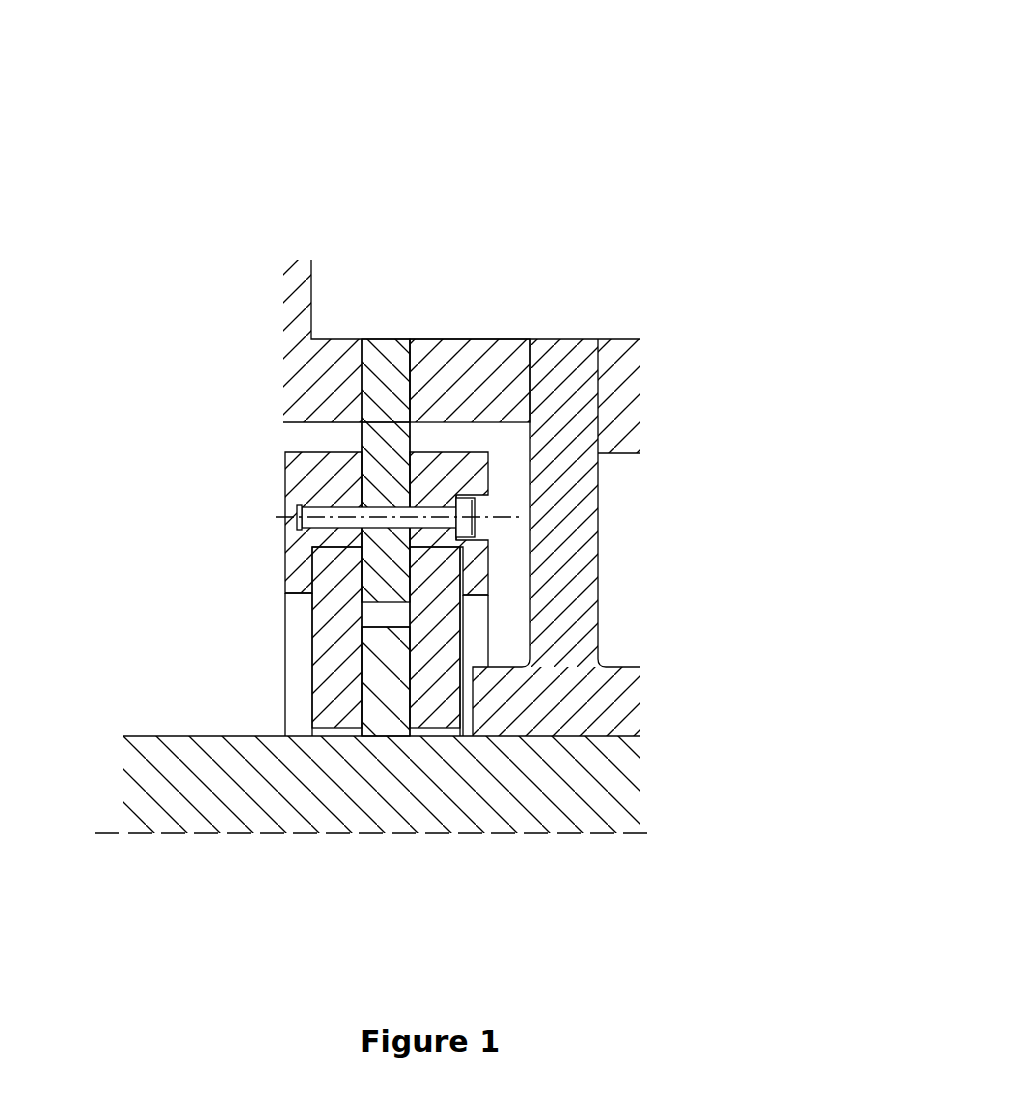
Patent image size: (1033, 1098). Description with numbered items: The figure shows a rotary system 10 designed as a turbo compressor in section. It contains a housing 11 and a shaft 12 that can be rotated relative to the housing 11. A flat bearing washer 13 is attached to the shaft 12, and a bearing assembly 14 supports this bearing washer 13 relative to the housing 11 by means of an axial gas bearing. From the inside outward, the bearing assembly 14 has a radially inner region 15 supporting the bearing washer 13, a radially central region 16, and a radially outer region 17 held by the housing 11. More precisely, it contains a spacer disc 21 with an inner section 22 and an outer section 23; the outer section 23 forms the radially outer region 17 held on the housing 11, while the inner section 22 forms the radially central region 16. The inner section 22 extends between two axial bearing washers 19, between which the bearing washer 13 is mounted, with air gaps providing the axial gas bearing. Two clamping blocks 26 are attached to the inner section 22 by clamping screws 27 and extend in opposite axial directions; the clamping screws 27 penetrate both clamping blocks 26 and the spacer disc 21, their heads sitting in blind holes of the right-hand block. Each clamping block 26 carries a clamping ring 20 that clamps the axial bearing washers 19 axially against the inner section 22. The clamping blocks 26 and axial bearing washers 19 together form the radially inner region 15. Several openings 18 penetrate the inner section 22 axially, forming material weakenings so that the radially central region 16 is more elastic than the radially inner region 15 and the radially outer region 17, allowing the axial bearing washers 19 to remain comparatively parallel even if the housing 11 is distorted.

The rotary system 10 is at (615, 97).
The housing 11 is at (633, 357).
The shaft 12 is at (558, 787).
The bearing washer 13 is at (387, 712).
The bearing assembly 14 is at (440, 408).
The radially inner region 15 is at (478, 652).
The radially central region 16 is at (345, 445).
The radially outer region 17 is at (420, 380).
The openings 18 is at (377, 437).
The axial bearing washers 19 is at (340, 685).
The clamping ring 20 is at (287, 573).
The spacer disc 21 is at (378, 408).
The inner section 22 is at (403, 470).
The outer section 23 is at (392, 358).
The clamping blocks 26 is at (297, 515).
The clamping screws 27 is at (443, 522).